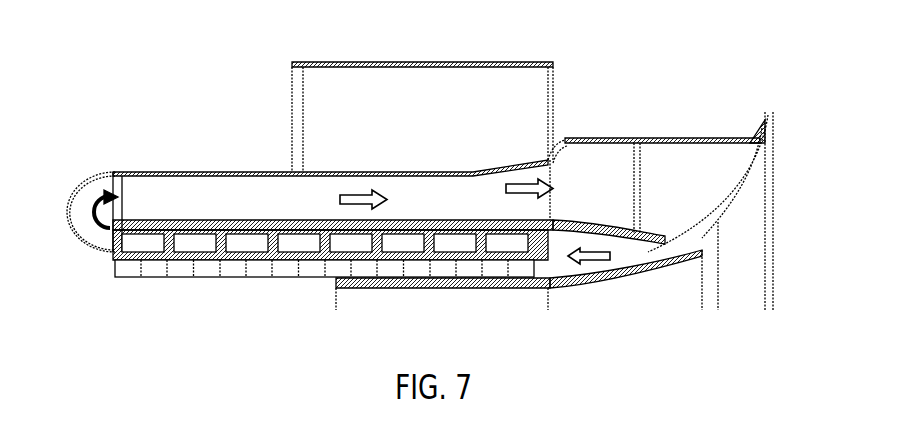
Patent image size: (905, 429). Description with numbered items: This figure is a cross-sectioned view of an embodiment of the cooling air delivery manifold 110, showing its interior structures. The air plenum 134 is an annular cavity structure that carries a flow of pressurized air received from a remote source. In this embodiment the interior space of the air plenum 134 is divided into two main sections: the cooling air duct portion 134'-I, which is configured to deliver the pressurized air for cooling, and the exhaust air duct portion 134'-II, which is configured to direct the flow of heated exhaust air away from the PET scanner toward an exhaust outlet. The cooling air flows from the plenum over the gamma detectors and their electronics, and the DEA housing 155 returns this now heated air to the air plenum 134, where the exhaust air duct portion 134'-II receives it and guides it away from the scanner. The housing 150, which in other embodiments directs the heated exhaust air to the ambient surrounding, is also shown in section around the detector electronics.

The housing 150 is at (143, 175).
The DEA housing 155 is at (262, 185).
The air plenum 134 is at (656, 146).
The exhaust air duct portion 134'-II is at (607, 139).
The cooling air duct portion 134'-I is at (727, 154).
The cooling air delivery manifold 110 is at (745, 287).